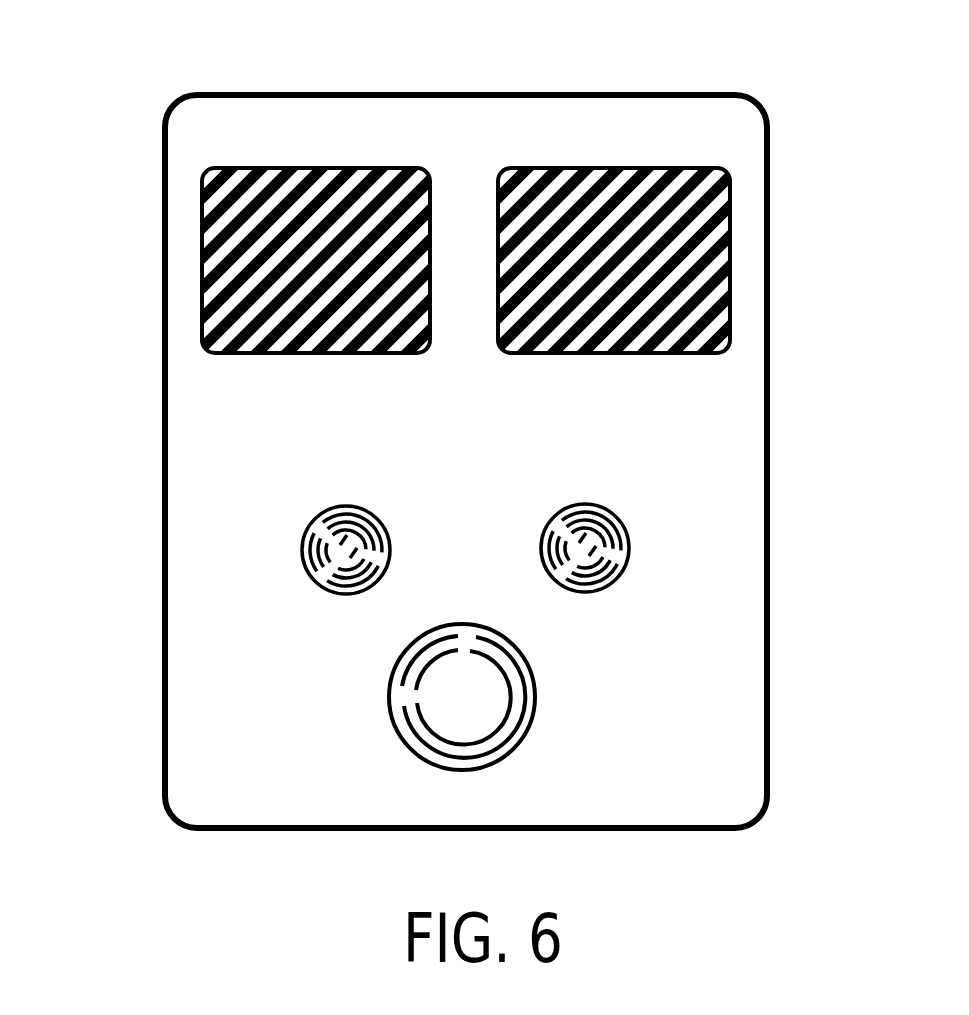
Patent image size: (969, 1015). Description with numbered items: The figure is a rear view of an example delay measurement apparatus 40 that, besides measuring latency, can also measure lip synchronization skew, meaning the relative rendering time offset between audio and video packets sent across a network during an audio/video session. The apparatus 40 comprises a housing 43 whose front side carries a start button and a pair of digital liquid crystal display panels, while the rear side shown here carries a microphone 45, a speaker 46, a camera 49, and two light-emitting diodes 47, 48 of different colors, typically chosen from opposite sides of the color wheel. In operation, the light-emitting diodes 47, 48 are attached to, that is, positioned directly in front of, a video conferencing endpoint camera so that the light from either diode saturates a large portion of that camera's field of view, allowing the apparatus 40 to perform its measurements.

The delay measurement apparatus 40 is at (322, 95).
The housing 43 is at (255, 705).
The microphone 45 is at (232, 265).
The speaker 46 is at (665, 263).
The light-emitting diode 47 is at (332, 543).
The light-emitting diode 48 is at (630, 545).
The camera 49 is at (465, 703).